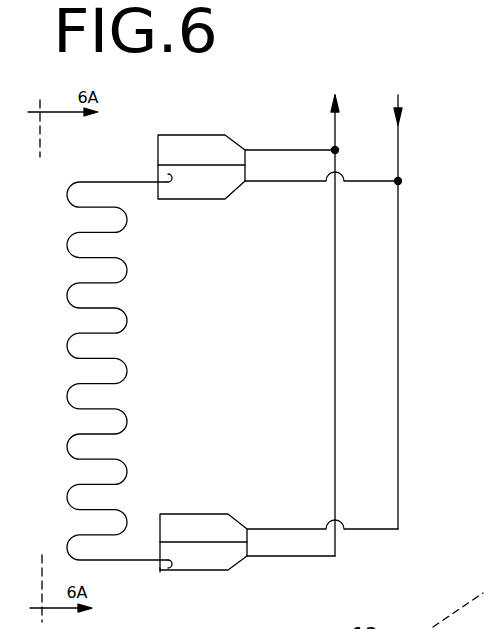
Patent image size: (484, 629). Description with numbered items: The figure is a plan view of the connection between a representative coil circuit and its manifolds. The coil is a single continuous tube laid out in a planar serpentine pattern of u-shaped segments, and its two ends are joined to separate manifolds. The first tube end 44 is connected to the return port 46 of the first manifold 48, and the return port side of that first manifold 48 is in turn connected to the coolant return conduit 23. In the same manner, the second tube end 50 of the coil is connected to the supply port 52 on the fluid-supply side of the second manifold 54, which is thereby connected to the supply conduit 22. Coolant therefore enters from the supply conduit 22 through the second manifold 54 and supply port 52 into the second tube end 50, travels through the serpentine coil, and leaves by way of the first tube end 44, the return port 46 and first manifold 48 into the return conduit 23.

The supply conduit 22 is at (399, 141).
The coolant return conduit 23 is at (336, 537).
The first tube end 44 is at (160, 560).
The return port 46 is at (168, 568).
The first manifold 48 is at (159, 572).
The second tube end 50 is at (162, 184).
The supply port 52 is at (168, 174).
The second manifold 54 is at (222, 133).